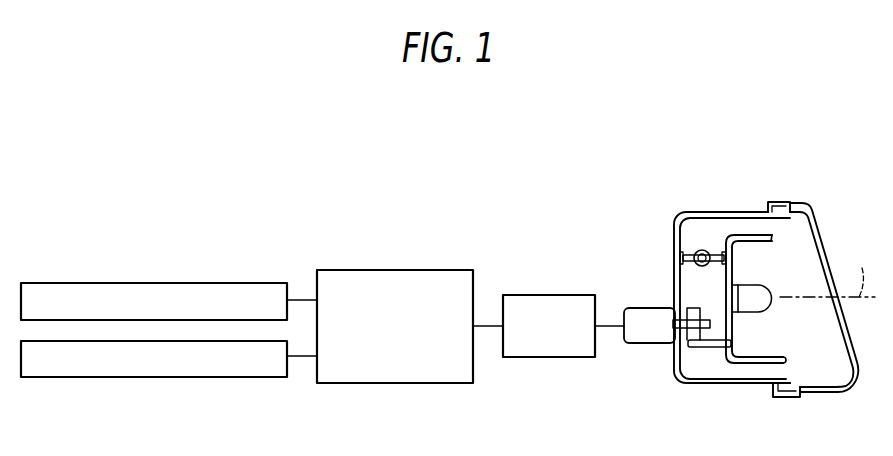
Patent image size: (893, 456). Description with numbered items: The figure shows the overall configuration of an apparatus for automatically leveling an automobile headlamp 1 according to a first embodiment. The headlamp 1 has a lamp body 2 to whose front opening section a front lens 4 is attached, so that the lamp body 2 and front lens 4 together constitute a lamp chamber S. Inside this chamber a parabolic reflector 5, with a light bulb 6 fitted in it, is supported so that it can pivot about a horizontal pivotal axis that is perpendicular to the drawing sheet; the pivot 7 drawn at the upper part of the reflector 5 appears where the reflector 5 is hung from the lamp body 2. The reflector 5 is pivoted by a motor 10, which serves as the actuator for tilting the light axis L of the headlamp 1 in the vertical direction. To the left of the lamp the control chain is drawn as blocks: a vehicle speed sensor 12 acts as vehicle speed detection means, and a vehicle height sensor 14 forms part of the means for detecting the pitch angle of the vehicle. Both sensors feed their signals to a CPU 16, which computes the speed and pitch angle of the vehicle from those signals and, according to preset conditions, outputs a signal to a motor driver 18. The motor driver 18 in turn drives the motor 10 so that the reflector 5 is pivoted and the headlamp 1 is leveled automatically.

The automobile headlamp 1 is at (750, 165).
The lamp body 2 is at (694, 212).
The front lens 4 is at (826, 250).
The parabolic reflector 5 is at (750, 235).
The light bulb 6 is at (757, 285).
The pivot 7 is at (694, 251).
The motor 10 is at (641, 308).
The vehicle speed sensor 12 is at (150, 283).
The vehicle height sensor 14 is at (150, 377).
The CPU 16 is at (393, 270).
The motor driver 18 is at (547, 295).